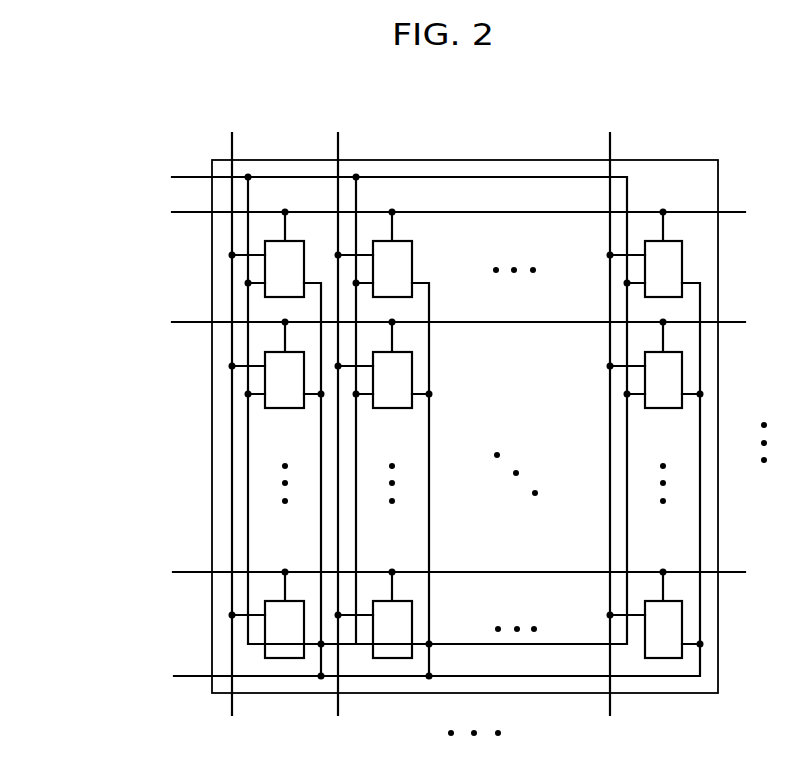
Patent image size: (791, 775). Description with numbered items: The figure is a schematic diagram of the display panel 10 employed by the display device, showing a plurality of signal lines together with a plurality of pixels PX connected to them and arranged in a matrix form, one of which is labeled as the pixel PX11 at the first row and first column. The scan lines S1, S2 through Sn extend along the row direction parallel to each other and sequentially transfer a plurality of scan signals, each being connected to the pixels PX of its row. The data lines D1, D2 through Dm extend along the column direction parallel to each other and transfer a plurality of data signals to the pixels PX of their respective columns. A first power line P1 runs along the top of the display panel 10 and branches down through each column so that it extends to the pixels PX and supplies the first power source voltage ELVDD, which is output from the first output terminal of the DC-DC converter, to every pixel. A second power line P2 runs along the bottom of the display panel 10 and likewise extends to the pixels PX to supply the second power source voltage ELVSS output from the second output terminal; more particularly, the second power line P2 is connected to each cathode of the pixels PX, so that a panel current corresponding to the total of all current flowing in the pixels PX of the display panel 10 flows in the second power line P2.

The display panel 10 is at (667, 160).
The pixel PX is at (682, 258).
The pixel in first row and first column PX11 is at (273, 248).
The first power line P1 is at (481, 177).
The second power line P2 is at (682, 677).
The first power source voltage ELVDD is at (375, 404).
The second power source voltage ELVSS is at (404, 486).
The first scan line S1 is at (472, 219).
The second scan line S2 is at (472, 330).
The n-th scan line Sn is at (473, 579).
The first data line D1 is at (244, 440).
The second data line D2 is at (351, 440).
The m-th data line Dm is at (621, 440).